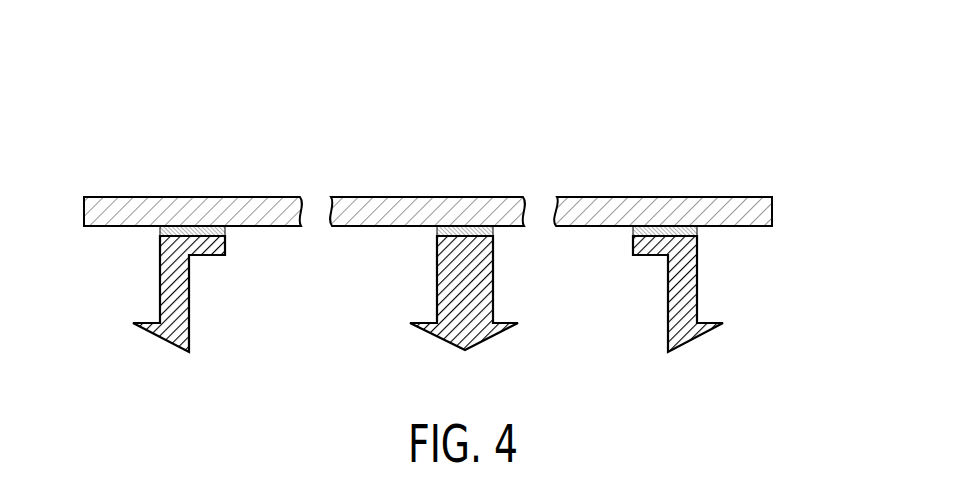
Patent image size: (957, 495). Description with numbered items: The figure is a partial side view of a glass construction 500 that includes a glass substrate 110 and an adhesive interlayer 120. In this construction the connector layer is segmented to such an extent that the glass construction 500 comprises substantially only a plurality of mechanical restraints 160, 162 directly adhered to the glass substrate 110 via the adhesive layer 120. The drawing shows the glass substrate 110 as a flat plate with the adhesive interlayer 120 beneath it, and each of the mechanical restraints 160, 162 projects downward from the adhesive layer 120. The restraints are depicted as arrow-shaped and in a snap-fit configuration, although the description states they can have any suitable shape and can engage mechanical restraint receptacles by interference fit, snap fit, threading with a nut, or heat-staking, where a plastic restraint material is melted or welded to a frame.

The glass substrate 110 is at (193, 206).
The adhesive interlayer 120 is at (222, 231).
The mechanical restraint 160 is at (441, 271).
The mechanical restraint 162 is at (663, 296).
The glass construction 500 is at (597, 148).